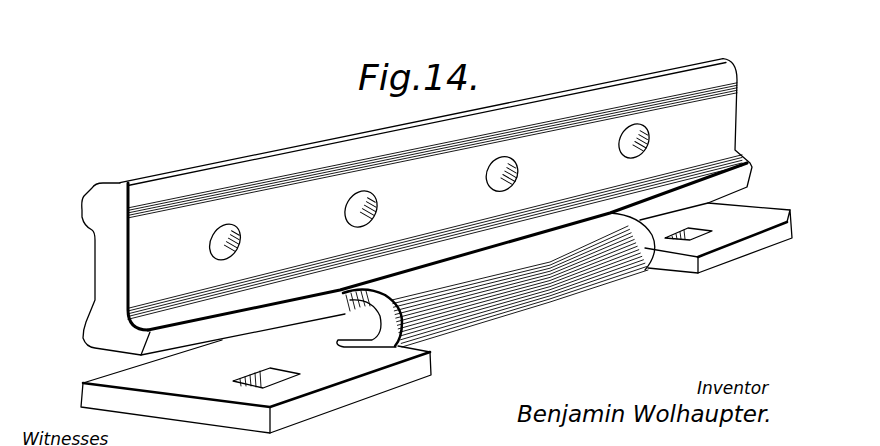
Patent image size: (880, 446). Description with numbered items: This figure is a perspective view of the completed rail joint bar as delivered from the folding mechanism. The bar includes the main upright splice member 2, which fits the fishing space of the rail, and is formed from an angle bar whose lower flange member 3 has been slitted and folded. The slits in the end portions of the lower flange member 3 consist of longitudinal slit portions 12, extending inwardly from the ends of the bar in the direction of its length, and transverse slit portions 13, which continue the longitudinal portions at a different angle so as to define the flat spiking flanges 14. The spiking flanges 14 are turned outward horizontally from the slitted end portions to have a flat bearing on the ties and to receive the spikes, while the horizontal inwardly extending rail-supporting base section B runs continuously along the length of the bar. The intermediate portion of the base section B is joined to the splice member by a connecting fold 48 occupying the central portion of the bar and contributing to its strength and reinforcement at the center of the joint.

The main upright splice member 2 is at (93, 194).
The lower flange member 3 is at (437, 219).
The longitudinal slit portions 12 is at (270, 308).
The transverse slit portions 13 is at (400, 311).
The spiking flanges 14 is at (336, 403).
The connecting fold 48 is at (543, 300).
The rail-supporting base section B is at (352, 327).